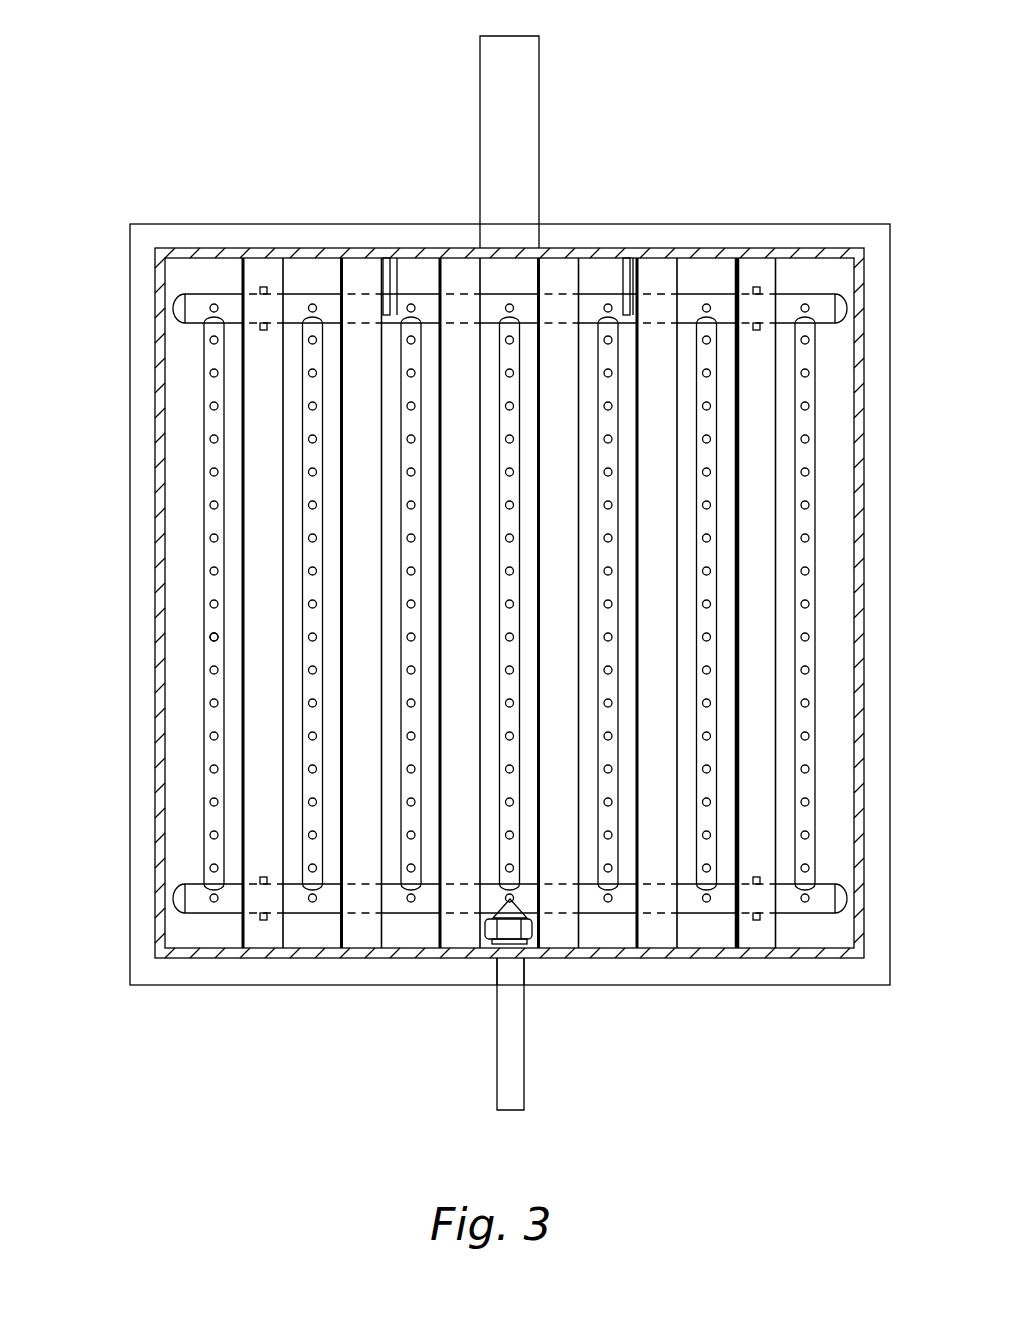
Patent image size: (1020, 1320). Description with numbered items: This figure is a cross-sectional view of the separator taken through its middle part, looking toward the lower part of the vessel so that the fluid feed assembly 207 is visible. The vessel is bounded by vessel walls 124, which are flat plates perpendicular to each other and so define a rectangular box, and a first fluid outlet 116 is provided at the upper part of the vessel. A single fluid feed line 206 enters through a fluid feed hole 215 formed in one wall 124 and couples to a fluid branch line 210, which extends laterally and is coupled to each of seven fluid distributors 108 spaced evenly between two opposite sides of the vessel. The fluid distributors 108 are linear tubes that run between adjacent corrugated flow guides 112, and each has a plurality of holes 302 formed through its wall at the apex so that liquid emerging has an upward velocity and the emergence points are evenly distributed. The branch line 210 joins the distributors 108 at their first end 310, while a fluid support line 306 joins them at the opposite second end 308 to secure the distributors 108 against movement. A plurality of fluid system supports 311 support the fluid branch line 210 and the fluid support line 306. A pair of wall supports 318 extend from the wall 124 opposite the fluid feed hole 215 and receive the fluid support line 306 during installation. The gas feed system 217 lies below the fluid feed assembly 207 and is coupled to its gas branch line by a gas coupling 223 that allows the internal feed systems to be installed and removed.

The first fluid outlet 116 is at (480, 73).
The fluid feed line 206 is at (497, 1083).
The fluid feed hole 215 is at (524, 958).
The vessel wall 124 is at (155, 552).
The second end 308 is at (205, 323).
The first end 310 is at (207, 885).
The flow guide 112 is at (262, 420).
The fluid branch line 210 is at (690, 913).
The fluid support line 306 is at (690, 293).
The gas feed system 217 is at (278, 506).
The fluid distributor 108 is at (205, 680).
The hole 302 is at (213, 636).
The fluid feed assembly 207 is at (195, 460).
The fluid system support 311 is at (265, 287).
The wall support 318 is at (398, 282).
The gas coupling 223 is at (485, 930).